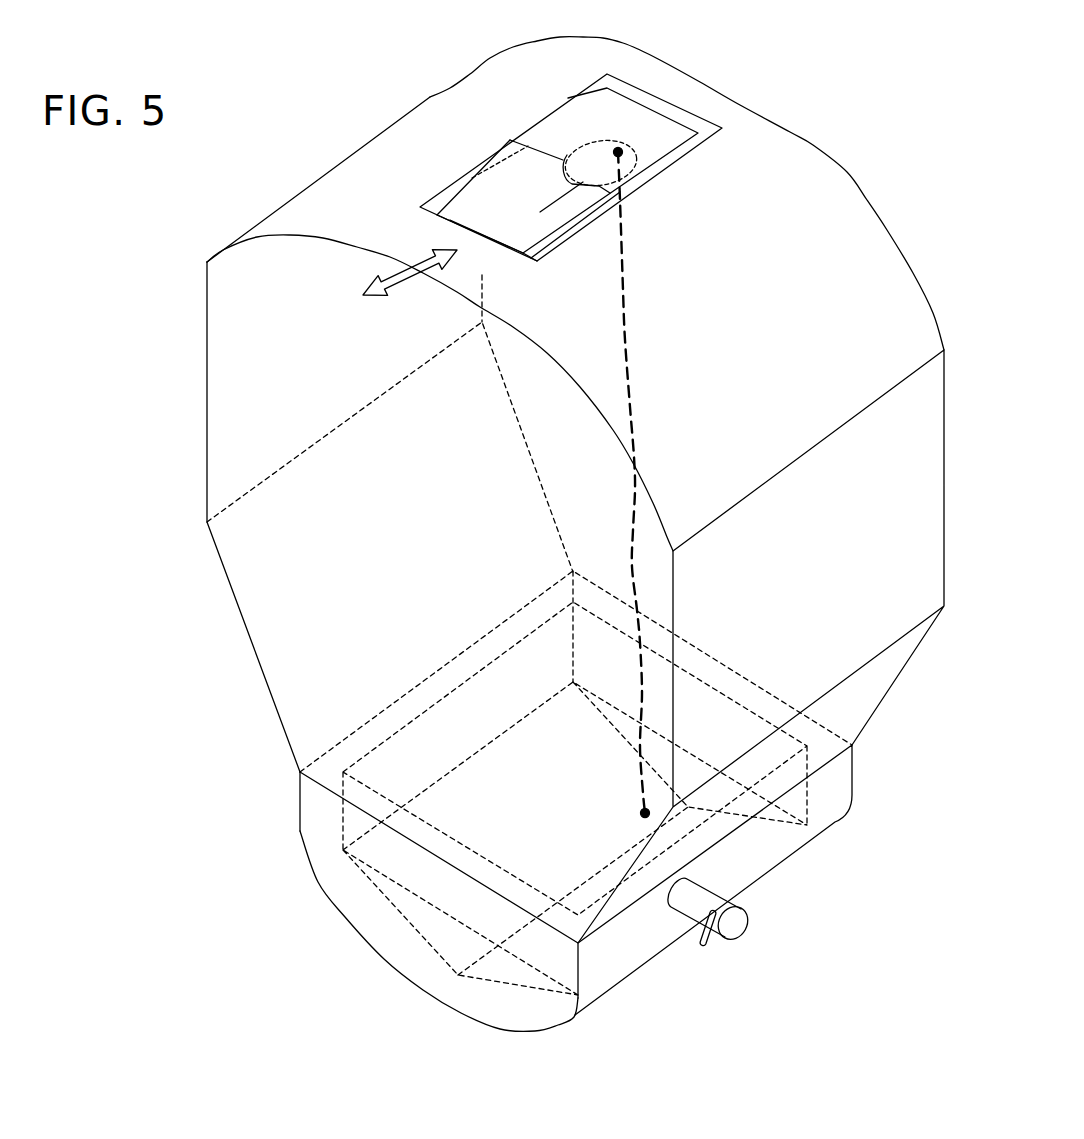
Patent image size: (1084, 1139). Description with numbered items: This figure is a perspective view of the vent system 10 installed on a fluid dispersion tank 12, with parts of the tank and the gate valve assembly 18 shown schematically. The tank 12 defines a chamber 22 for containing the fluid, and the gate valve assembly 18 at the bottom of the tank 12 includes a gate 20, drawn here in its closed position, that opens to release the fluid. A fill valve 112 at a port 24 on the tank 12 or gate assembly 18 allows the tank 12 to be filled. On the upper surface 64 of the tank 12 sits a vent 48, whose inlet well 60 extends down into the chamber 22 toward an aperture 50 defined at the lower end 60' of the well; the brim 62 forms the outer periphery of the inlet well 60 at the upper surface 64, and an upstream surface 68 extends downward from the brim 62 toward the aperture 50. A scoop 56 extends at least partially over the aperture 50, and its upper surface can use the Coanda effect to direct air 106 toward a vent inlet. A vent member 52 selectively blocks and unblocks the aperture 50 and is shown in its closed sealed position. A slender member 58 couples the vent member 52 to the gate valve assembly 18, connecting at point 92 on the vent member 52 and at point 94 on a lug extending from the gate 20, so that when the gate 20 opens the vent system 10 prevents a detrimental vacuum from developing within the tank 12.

The vent system 10 is at (340, 96).
The fluid dispersion tank 12 is at (248, 636).
The gate valve assembly 18 is at (300, 806).
The gate 20 is at (407, 922).
The chamber 22 is at (390, 423).
The port 24 is at (745, 940).
The vent 48 is at (687, 112).
The aperture 50 is at (582, 150).
The vent member 52 is at (568, 160).
The scoop 56 is at (553, 132).
The slender member 58 is at (627, 343).
The inlet well 60 is at (576, 238).
The lower end of inlet well 60' is at (567, 248).
The brim 62 is at (494, 172).
The upper surface 64 is at (670, 88).
The upstream surface 68 is at (468, 210).
The point 92 is at (633, 139).
The point 94 is at (644, 813).
The air 106 is at (403, 293).
The fill valve 112 is at (702, 946).